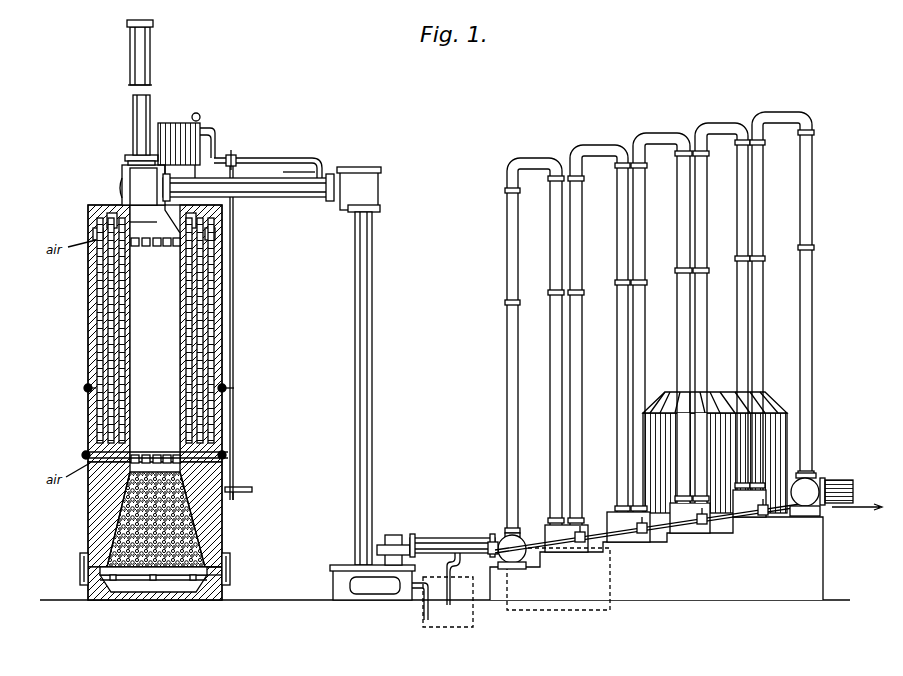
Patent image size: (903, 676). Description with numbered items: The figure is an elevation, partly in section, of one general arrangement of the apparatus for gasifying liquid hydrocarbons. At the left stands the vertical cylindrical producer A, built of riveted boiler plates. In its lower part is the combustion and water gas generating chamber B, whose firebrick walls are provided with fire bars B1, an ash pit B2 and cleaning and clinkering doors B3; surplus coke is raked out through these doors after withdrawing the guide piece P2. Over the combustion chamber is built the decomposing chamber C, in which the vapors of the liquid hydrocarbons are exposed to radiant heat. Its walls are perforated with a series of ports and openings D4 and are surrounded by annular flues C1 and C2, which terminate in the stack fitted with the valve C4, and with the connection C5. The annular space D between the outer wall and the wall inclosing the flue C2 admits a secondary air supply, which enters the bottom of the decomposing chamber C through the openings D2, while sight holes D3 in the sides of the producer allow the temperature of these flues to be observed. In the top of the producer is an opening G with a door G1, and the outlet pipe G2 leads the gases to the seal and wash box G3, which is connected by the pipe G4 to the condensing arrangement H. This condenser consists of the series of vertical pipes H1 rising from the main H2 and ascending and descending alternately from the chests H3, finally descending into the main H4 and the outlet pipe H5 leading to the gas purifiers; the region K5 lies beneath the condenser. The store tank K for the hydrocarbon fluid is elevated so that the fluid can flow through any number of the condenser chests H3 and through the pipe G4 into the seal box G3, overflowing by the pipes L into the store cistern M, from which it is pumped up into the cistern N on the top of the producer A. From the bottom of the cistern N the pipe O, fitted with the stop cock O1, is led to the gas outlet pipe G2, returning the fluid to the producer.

The producer A is at (92, 336).
The combustion and water gas generating chamber B is at (118, 513).
The fire bars B1 is at (166, 575).
The ash pit B2 is at (153, 585).
The cleaning and clinkering doors B3 is at (80, 574).
The decomposing chamber C is at (155, 333).
The annular space or flue C1 is at (122, 327).
The annular space or flue C2 is at (113, 272).
The stack valve C4 is at (152, 21).
The connecting pipe C5 is at (133, 129).
The annular space or flue D is at (96, 356).
The openings D2 is at (156, 455).
The sight holes D3 is at (84, 389).
The ports and openings D4 is at (155, 234).
The opening G is at (143, 193).
The door G1 is at (125, 158).
The gas outlet pipe G2 is at (379, 366).
The seal and wash box G3 is at (372, 582).
The pipe G4 is at (440, 541).
The condensing arrangement H is at (550, 346).
The vertical pipes H1 is at (507, 395).
The main H2 is at (513, 565).
The condenser chests H3 is at (612, 548).
The main H4 is at (806, 518).
The outlet pipe H5 is at (686, 539).
The store tank K is at (715, 452).
The pit K5 is at (612, 584).
The overflow pipes L is at (428, 583).
The store cistern M is at (463, 591).
The cistern N is at (186, 145).
The pipe O is at (250, 156).
The stop cock O1 is at (233, 154).
The guide piece P2 is at (226, 579).